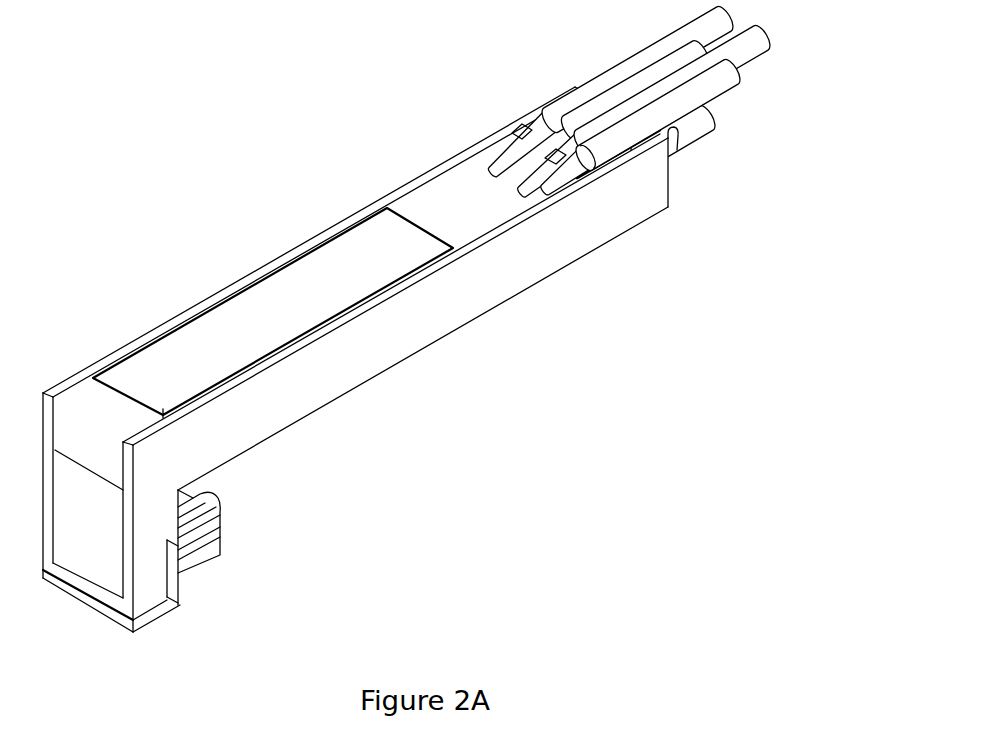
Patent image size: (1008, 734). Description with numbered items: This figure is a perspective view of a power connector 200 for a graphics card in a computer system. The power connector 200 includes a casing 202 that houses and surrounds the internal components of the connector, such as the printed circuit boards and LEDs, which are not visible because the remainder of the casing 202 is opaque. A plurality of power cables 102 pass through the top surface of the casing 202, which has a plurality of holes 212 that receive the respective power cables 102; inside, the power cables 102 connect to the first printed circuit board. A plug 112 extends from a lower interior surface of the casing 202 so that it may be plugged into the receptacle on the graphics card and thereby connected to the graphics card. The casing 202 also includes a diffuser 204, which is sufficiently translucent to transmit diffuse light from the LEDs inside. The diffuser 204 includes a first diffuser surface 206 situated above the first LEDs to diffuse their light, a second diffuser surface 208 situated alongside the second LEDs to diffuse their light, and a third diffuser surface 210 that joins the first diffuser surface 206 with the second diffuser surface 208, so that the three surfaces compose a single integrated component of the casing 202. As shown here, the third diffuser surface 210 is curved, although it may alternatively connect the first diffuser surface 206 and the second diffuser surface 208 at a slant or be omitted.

The power connector 200 is at (184, 104).
The power cables 102 is at (614, 101).
The plug 112 is at (213, 553).
The casing 202 is at (379, 359).
The diffuser 204 is at (78, 477).
The first diffuser surface 206 is at (282, 331).
The second diffuser surface 208 is at (104, 550).
The third diffuser surface 210 is at (116, 450).
The holes 212 is at (490, 172).